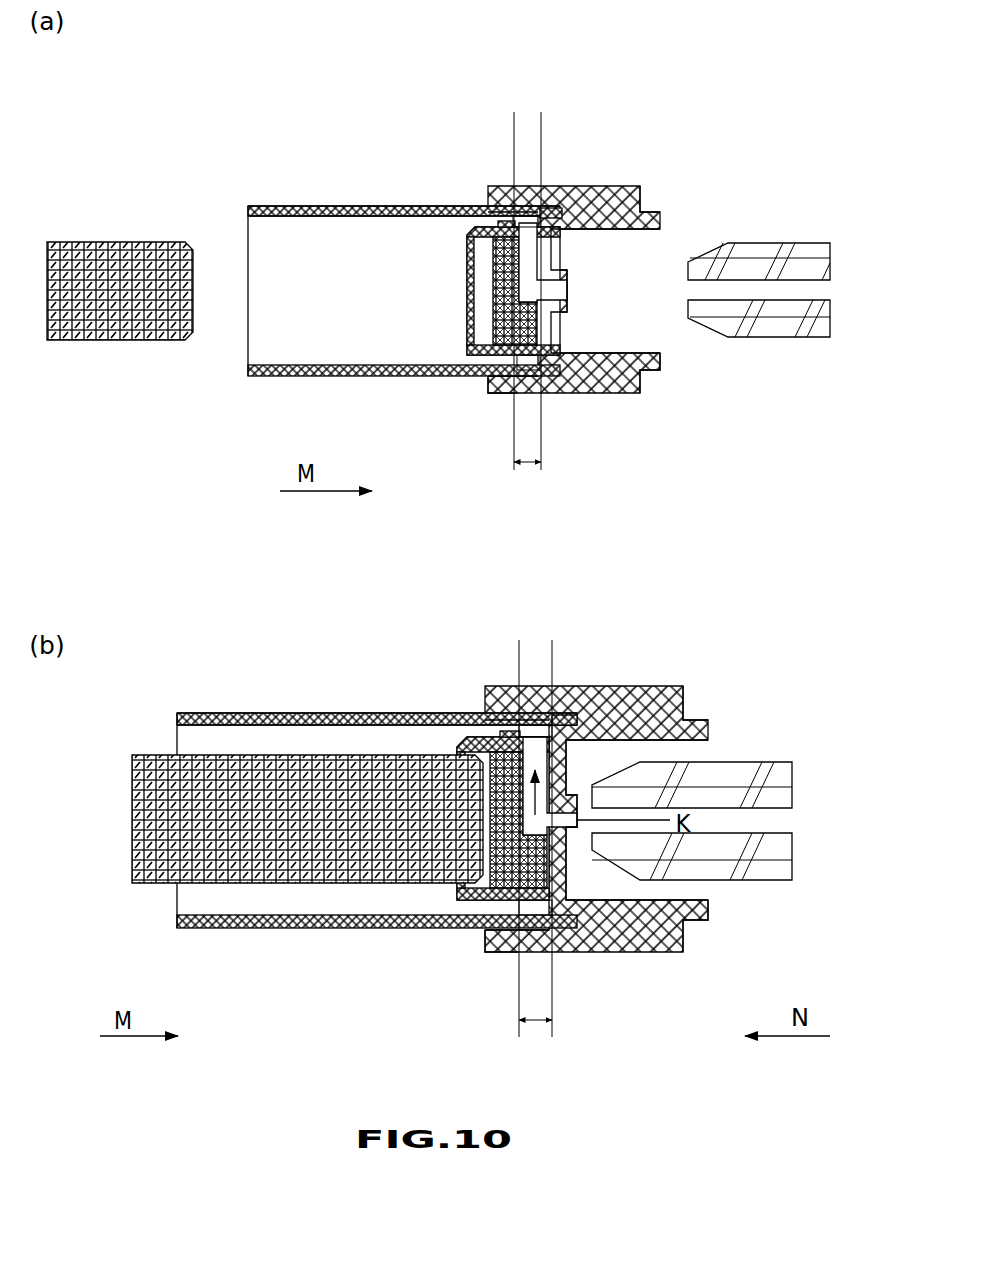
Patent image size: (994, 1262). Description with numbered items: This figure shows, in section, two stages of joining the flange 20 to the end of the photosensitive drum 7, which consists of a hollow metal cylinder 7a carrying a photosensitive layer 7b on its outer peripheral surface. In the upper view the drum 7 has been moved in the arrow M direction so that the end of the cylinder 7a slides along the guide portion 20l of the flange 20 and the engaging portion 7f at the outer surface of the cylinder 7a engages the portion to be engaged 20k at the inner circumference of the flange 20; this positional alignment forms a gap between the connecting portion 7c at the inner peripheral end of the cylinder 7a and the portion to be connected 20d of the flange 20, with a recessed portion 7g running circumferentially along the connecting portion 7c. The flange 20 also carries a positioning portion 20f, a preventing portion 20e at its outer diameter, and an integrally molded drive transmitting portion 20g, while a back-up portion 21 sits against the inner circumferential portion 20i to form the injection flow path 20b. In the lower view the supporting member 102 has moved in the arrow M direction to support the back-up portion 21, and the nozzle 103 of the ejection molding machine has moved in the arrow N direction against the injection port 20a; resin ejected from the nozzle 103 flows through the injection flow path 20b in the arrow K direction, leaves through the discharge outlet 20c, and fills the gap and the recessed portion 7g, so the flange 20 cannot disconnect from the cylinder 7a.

The photosensitive drum 7 is at (262, 200).
The hollow metal cylinder 7a is at (300, 215).
The photosensitive layer 7b is at (348, 205).
The connecting portion 7c is at (541, 123).
The engaging portion 7f is at (553, 272).
The recessed portion 7g is at (520, 214).
The flange 20 is at (605, 410).
The injection port 20a is at (567, 292).
The injection flow path 20b is at (590, 215).
The discharge outlet 20c is at (548, 216).
The portion to be connected 20d is at (534, 764).
The preventing portion 20e is at (500, 212).
The positioning portion 20f is at (647, 212).
The drive transmitting portion 20g is at (640, 395).
The inner circumferential portion 20i is at (497, 357).
The portion to be engaged 20k is at (550, 387).
The guide portion 20l is at (500, 385).
The back-up portion 21 is at (510, 312).
The supporting member 102 is at (124, 328).
The nozzle 103 is at (767, 322).